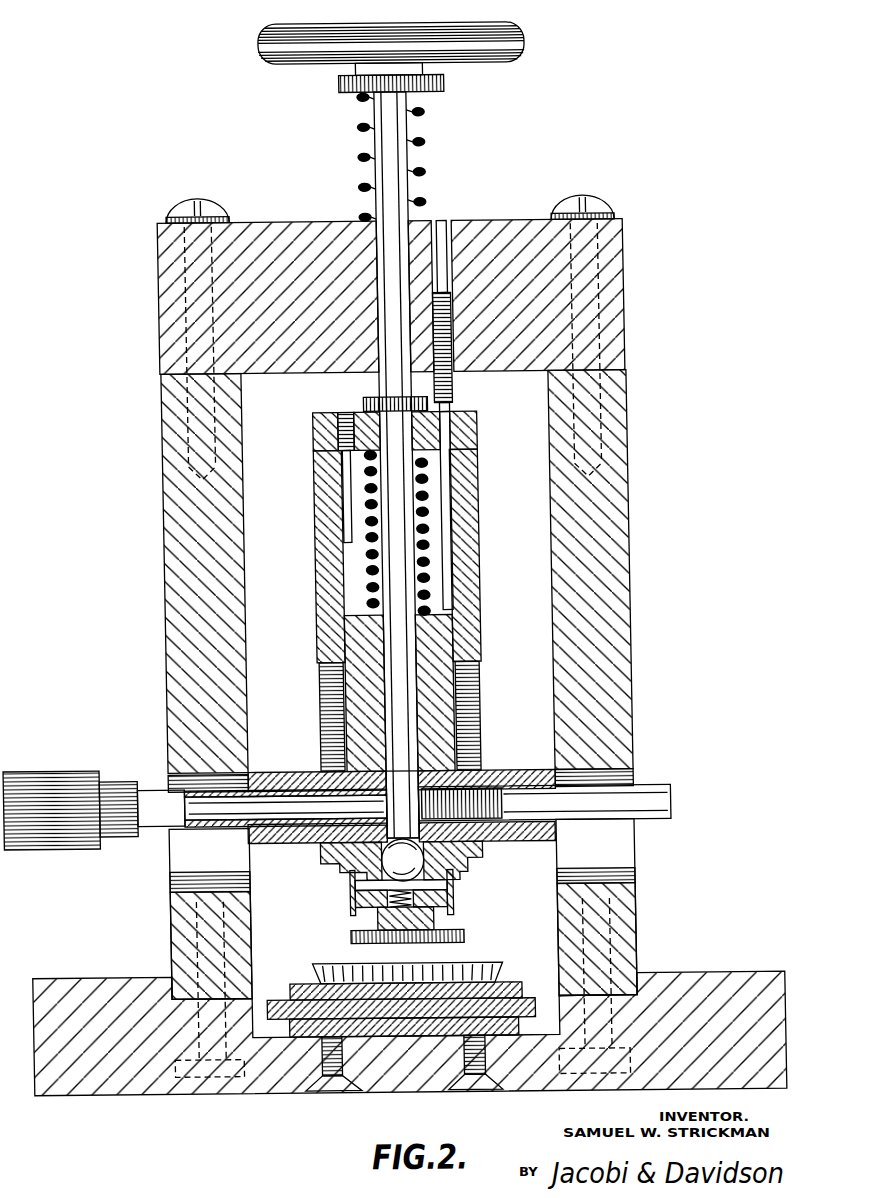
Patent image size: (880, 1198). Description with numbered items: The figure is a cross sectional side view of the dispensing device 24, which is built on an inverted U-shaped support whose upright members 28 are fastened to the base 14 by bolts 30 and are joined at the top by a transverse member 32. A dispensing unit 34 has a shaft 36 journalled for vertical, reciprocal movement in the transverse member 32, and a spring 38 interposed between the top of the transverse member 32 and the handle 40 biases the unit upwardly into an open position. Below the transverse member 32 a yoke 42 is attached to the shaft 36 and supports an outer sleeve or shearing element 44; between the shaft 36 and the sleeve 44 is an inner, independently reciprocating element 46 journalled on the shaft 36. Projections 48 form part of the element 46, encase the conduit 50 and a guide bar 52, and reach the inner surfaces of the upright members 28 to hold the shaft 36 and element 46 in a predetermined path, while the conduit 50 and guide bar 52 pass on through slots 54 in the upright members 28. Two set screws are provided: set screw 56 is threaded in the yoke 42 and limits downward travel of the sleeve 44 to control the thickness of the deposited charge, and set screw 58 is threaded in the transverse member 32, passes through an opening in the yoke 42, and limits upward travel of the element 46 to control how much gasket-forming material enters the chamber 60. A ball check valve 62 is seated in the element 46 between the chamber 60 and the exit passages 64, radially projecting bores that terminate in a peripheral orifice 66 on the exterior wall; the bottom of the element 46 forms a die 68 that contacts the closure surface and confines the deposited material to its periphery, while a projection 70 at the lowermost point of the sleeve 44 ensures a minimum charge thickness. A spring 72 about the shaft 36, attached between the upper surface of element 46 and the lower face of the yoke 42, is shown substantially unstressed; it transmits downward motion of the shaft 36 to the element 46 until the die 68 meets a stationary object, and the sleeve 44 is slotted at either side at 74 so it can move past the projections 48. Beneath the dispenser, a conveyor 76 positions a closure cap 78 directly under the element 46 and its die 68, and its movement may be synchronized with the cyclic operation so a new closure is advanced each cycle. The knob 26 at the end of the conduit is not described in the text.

The base 14 is at (705, 993).
The dispensing device 24 is at (432, 583).
The knob 26 is at (47, 771).
The upright members 28 is at (181, 558).
The bolts 30 is at (208, 1067).
The transverse member 32 is at (537, 221).
The dispensing unit 34 is at (371, 57).
The shaft 36 is at (402, 215).
The spring 38 is at (428, 170).
The handle 40 is at (529, 46).
The yoke 42 is at (472, 411).
The outer sleeve 44 is at (480, 496).
The inner reciprocating element 46 is at (441, 652).
The projections 48 is at (280, 774).
The conduit 50 is at (241, 802).
The guide bar 52 is at (665, 793).
The slots 54 is at (173, 870).
The set screw 56 is at (347, 478).
The set screw 58 is at (448, 465).
The chamber 60 is at (406, 790).
The ball check valve 62 is at (385, 868).
The exit passages 64 is at (346, 912).
The peripheral orifice 66 is at (351, 914).
The die 68 is at (457, 933).
The projection 70 is at (460, 879).
The spring 72 is at (421, 545).
The slots 74 is at (469, 673).
The conveyor 76 is at (283, 984).
The closure cap 78 is at (490, 966).